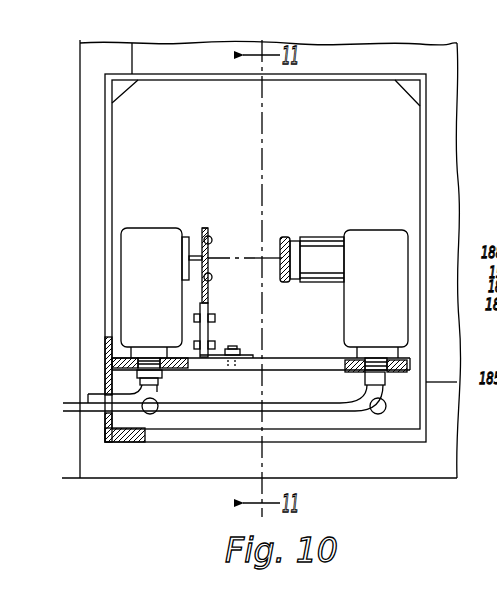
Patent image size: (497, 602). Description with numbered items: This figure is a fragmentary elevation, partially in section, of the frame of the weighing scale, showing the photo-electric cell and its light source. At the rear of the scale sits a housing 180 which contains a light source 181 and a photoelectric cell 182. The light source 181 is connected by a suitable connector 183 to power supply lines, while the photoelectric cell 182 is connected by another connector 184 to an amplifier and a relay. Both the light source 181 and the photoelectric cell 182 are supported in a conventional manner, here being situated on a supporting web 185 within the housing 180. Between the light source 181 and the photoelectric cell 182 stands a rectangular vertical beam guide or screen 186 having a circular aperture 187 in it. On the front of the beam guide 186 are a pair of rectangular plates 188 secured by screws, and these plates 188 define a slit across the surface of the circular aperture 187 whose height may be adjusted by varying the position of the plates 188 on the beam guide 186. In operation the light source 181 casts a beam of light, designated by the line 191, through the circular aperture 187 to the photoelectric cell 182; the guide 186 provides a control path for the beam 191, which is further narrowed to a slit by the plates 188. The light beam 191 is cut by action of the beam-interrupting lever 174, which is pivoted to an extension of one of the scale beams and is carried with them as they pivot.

The housing 180 is at (423, 128).
The light source 181 is at (378, 243).
The photoelectric cell 182 is at (140, 250).
The connector 183 is at (227, 409).
The connector 184 is at (96, 394).
The supporting web 185 is at (312, 341).
The beam guide 186 is at (206, 230).
The circular aperture 187 is at (206, 265).
The rectangular plates 188 is at (211, 240).
The beam-interrupting lever 174 is at (201, 230).
The light beam 191 is at (272, 248).